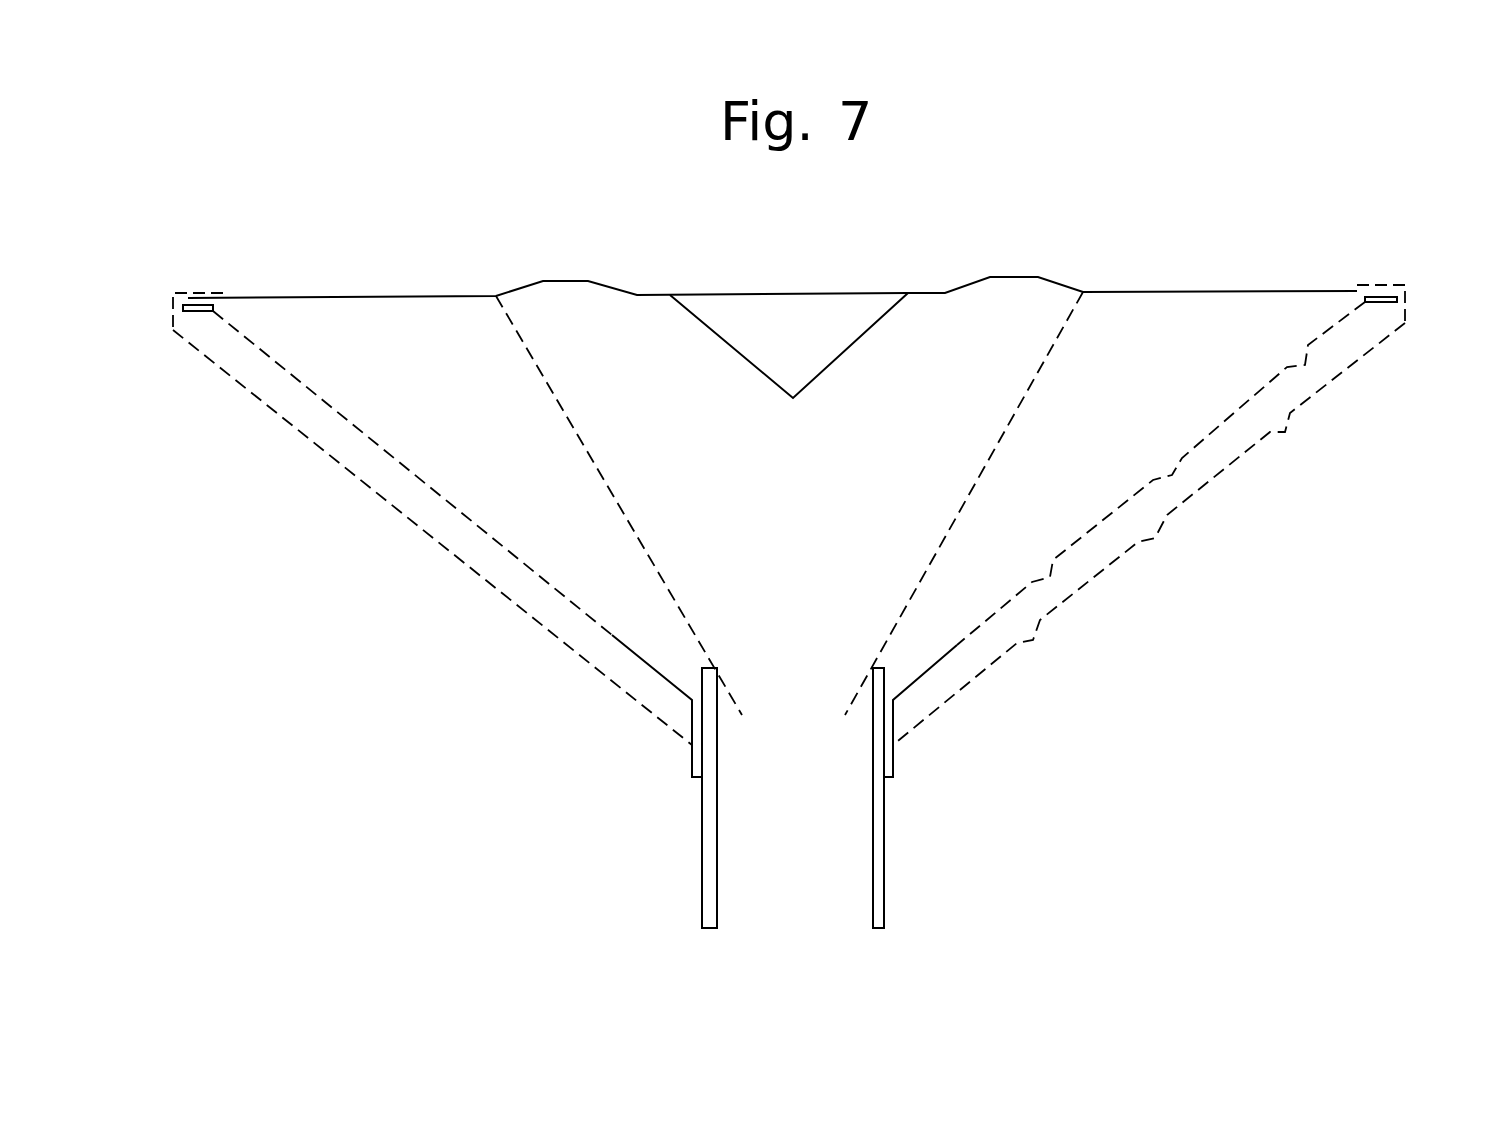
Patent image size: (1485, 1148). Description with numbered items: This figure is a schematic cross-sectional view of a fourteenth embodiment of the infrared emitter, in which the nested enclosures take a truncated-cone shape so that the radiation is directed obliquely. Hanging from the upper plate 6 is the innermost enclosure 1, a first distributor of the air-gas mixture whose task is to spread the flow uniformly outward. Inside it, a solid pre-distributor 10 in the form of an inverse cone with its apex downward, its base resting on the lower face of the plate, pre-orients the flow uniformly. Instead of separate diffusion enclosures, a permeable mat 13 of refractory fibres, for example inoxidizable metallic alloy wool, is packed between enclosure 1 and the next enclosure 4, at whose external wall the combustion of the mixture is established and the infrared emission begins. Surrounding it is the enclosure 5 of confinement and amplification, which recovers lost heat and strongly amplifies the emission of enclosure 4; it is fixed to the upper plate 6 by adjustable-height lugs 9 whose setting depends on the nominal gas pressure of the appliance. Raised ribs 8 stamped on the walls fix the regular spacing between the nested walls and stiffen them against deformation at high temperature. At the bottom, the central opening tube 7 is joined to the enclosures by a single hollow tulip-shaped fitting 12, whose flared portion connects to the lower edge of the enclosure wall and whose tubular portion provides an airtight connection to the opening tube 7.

The enclosure 1 is at (623, 517).
The enclosure 4 is at (1267, 383).
The enclosure of confinement and amplification 5 is at (505, 597).
The upper plate 6 is at (1229, 293).
The central opening tube 7 is at (703, 799).
The raised ribs 8 is at (1170, 478).
The adjustable-height lugs 9 is at (1385, 286).
The pre-distributor 10 is at (750, 366).
The tulip-shaped fitting 12 is at (930, 670).
The permeable mat 13 is at (548, 512).